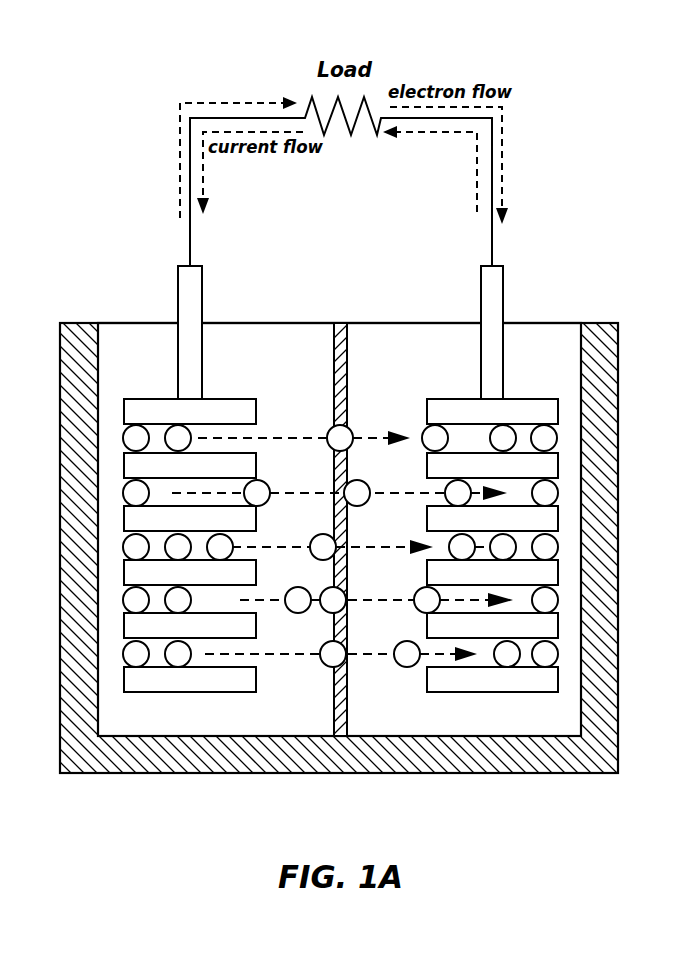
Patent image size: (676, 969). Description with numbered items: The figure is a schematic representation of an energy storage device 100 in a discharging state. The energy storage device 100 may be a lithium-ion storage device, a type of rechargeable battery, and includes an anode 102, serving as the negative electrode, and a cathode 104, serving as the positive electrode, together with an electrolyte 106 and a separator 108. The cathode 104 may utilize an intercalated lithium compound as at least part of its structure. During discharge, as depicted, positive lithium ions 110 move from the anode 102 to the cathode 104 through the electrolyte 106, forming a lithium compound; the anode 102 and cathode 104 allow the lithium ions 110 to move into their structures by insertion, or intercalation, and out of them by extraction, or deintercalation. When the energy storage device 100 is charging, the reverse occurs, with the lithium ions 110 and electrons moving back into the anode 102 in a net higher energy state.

The energy storage device 100 is at (555, 117).
The anode 102 is at (192, 287).
The cathode 104 is at (492, 287).
The electrolyte 106 is at (390, 710).
The separator 108 is at (337, 697).
The lithium ions 110 is at (357, 480).